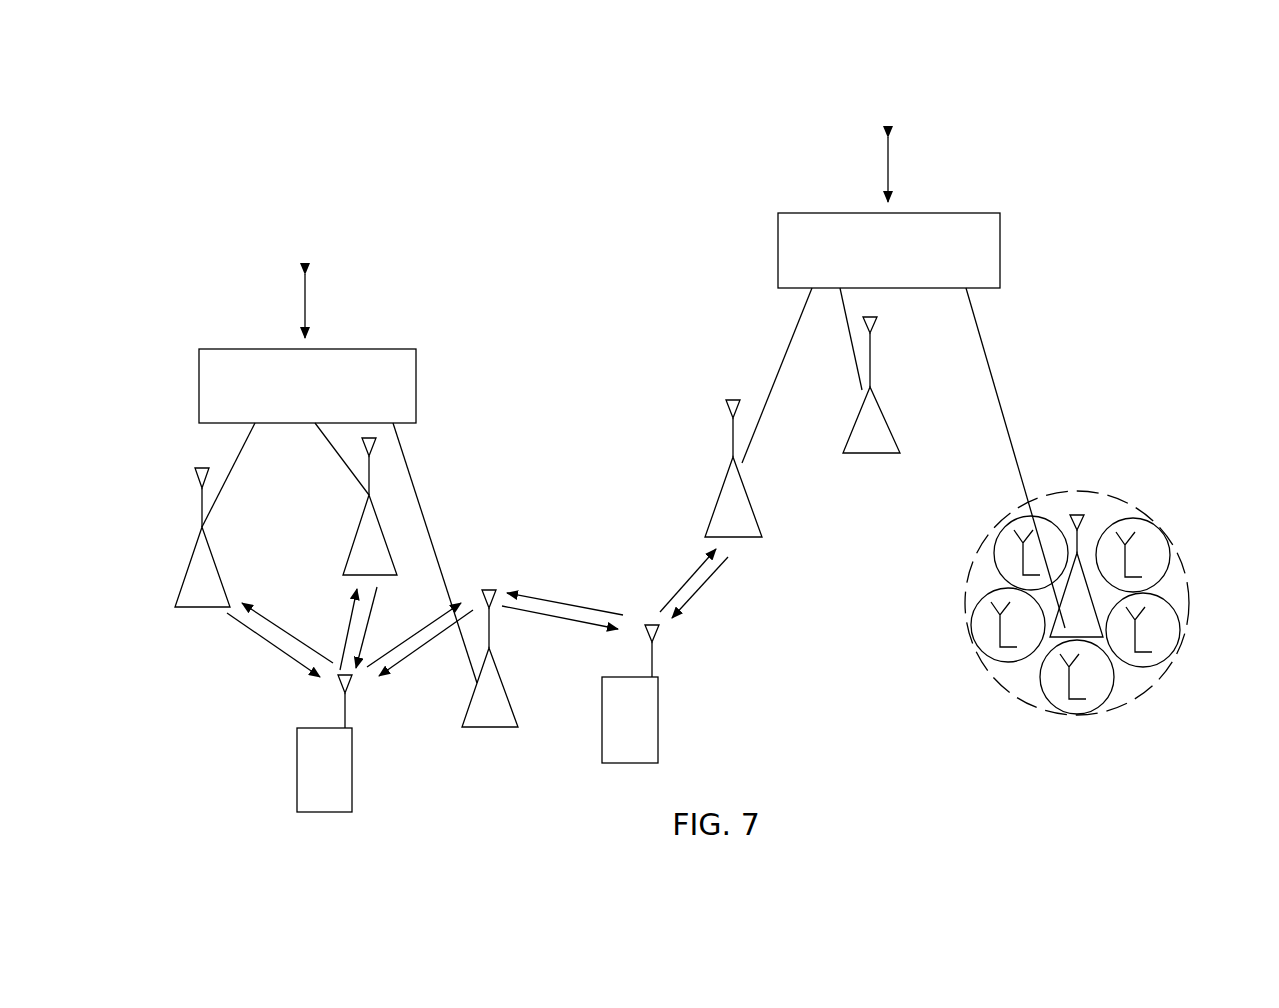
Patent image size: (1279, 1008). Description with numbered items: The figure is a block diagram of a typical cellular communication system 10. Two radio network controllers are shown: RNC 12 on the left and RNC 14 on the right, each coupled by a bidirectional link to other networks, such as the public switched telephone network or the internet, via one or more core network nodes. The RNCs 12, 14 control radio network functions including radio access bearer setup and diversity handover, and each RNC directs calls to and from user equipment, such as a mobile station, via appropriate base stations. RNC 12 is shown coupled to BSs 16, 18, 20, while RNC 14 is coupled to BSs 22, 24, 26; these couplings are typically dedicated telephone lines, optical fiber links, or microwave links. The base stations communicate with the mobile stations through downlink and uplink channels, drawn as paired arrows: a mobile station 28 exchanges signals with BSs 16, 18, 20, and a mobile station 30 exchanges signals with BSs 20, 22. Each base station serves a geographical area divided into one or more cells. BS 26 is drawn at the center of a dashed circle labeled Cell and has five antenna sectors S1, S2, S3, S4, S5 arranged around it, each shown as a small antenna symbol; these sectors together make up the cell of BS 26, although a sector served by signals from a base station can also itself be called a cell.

The cellular communication system 10 is at (174, 298).
The radio network controller 12 is at (405, 409).
The radio network controller 14 is at (989, 273).
The base station 16 is at (195, 547).
The base station 18 is at (356, 536).
The base station 20 is at (498, 667).
The base station 22 is at (757, 495).
The base station 24 is at (887, 393).
The base station 26 is at (1085, 522).
The mobile station 28 is at (296, 755).
The mobile station 30 is at (601, 707).
The antenna sector S1 is at (1145, 522).
The antenna sector S2 is at (1171, 662).
The antenna sector S3 is at (1112, 690).
The antenna sector S4 is at (969, 628).
The antenna sector S5 is at (993, 549).
The cell Cell is at (1180, 556).